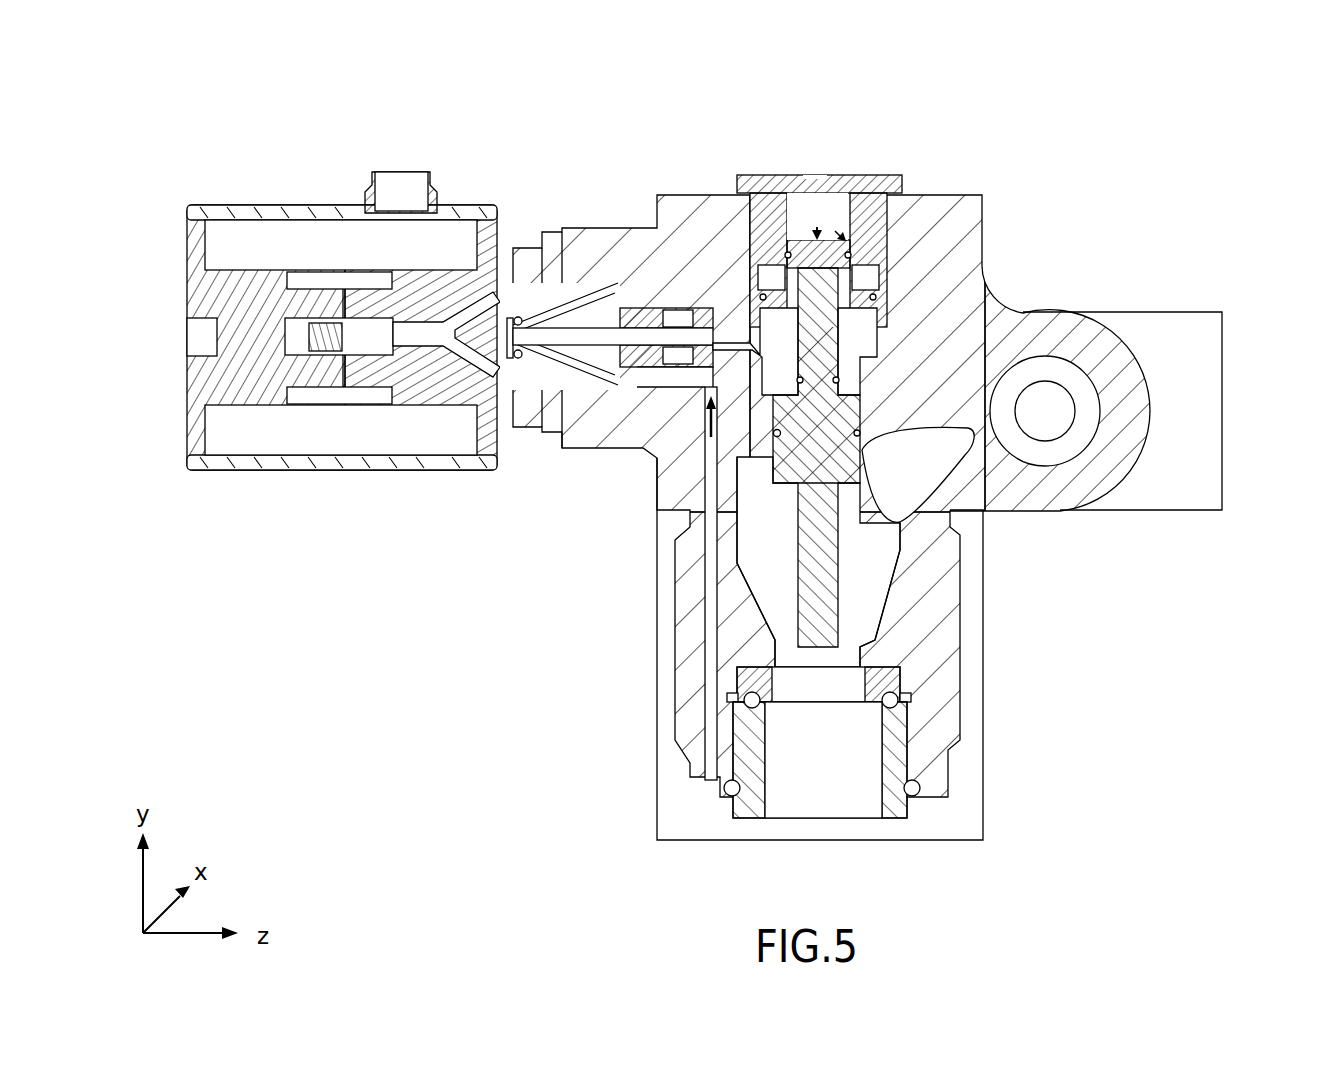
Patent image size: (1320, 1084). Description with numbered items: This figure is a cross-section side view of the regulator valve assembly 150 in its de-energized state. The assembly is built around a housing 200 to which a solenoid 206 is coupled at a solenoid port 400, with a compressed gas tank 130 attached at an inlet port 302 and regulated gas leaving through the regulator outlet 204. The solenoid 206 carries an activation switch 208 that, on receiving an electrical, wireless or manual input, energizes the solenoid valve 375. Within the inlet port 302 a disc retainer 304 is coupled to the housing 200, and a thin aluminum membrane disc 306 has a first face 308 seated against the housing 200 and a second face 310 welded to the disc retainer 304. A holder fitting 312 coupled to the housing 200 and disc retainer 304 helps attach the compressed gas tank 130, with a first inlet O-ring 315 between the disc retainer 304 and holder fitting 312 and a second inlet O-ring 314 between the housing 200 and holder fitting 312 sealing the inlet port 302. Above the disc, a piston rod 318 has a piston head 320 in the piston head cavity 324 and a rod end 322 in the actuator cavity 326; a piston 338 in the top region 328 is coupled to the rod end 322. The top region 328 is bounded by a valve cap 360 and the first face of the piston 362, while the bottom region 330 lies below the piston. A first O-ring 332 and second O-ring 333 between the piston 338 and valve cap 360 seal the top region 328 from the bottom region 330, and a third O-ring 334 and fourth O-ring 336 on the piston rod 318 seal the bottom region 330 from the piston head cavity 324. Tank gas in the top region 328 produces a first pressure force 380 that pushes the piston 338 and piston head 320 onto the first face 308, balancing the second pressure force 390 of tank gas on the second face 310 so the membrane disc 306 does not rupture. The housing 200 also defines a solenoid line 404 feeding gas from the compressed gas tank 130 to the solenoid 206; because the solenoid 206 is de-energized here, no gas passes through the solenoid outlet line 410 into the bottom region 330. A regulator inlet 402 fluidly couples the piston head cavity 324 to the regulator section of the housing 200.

The compressed gas tank 130 is at (980, 574).
The regulator valve assembly 150 is at (789, 112).
The housing 200 is at (923, 194).
The regulator outlet 204 is at (1205, 326).
The solenoid 206 is at (287, 206).
The activation switch 208 is at (415, 173).
The inlet port 302 is at (835, 819).
The disc retainer 304 is at (905, 691).
The membrane disc 306 is at (903, 668).
The first face 308 is at (842, 668).
The second face 310 is at (797, 668).
The holder fitting 312 is at (740, 818).
The second inlet O-ring 314 is at (913, 800).
The first inlet O-ring 315 is at (735, 703).
The piston rod 318 is at (742, 571).
The piston head 320 is at (740, 667).
The rod end 322 is at (893, 259).
The piston head cavity 324 is at (780, 601).
The actuator cavity 326 is at (852, 176).
The top region 328 is at (822, 176).
The bottom region 330 is at (755, 351).
The first O-ring 332 is at (786, 254).
The second O-ring 333 is at (876, 299).
The third O-ring 334 is at (850, 368).
The fourth O-ring 336 is at (774, 436).
The piston 338 is at (787, 176).
The valve cap 360 is at (737, 176).
The first face of the piston 362 is at (885, 193).
The solenoid valve 375 is at (500, 317).
The first pressure force 380 is at (817, 217).
The second pressure force 390 is at (826, 704).
The solenoid port 400 is at (597, 268).
The regulator inlet 402 is at (948, 474).
The solenoid line 404 is at (708, 497).
The solenoid outlet line 410 is at (560, 387).